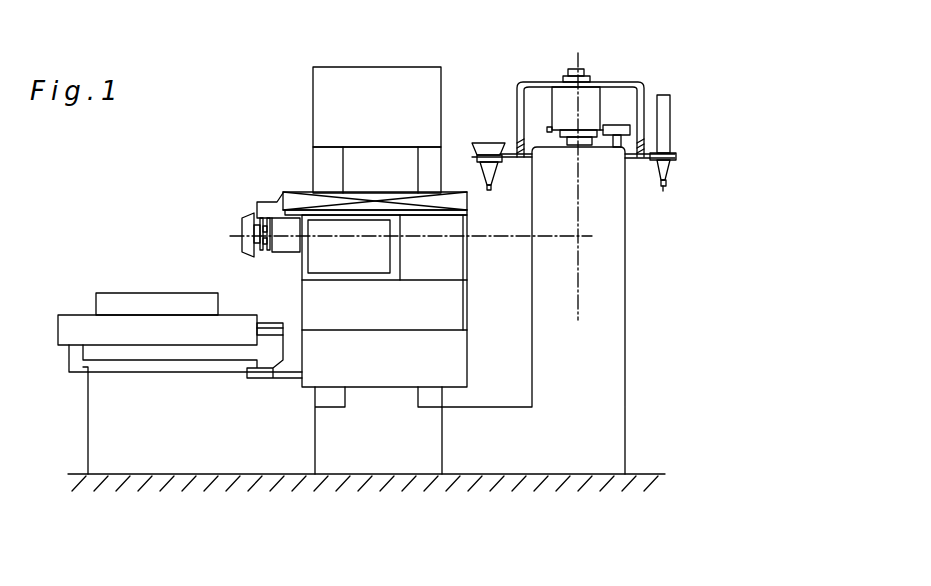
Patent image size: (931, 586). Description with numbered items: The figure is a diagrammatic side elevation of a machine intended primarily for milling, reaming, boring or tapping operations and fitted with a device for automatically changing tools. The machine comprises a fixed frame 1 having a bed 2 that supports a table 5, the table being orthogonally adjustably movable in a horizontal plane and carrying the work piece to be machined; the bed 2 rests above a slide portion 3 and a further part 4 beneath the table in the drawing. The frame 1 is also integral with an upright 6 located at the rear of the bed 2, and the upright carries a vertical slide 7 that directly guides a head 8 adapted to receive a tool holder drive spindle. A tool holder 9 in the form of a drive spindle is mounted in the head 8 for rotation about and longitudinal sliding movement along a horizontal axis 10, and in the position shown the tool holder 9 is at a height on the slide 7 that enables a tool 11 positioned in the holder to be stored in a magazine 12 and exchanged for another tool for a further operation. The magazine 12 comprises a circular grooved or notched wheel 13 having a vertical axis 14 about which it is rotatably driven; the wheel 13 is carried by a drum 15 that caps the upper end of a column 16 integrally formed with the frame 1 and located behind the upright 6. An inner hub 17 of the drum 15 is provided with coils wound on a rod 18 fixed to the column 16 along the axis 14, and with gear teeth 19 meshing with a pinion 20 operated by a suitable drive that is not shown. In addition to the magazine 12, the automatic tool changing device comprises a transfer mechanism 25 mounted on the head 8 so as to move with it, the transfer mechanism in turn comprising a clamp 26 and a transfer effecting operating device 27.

The fixed frame 1 is at (366, 452).
The bed 2 is at (130, 363).
The slide 3 is at (83, 352).
The table 4 is at (73, 313).
The table 5 is at (150, 298).
The upright 6 is at (377, 107).
The vertical slide 7 is at (428, 172).
The head 8 is at (384, 344).
The tool holder 9 is at (283, 243).
The horizontal axis 10 is at (434, 236).
The tool 11 is at (242, 230).
The magazine 12 is at (652, 95).
The notched wheel 13 is at (643, 160).
The vertical axis 14 is at (578, 262).
The drum 15 is at (592, 112).
The column 16 is at (617, 300).
The inner hub 17 is at (650, 96).
The rod 18 is at (585, 68).
The gear teeth 19 is at (548, 127).
The pinion 20 is at (630, 130).
The transfer mechanism 25 is at (296, 189).
The clamp 26 is at (275, 200).
The transfer effecting operating device 27 is at (360, 200).